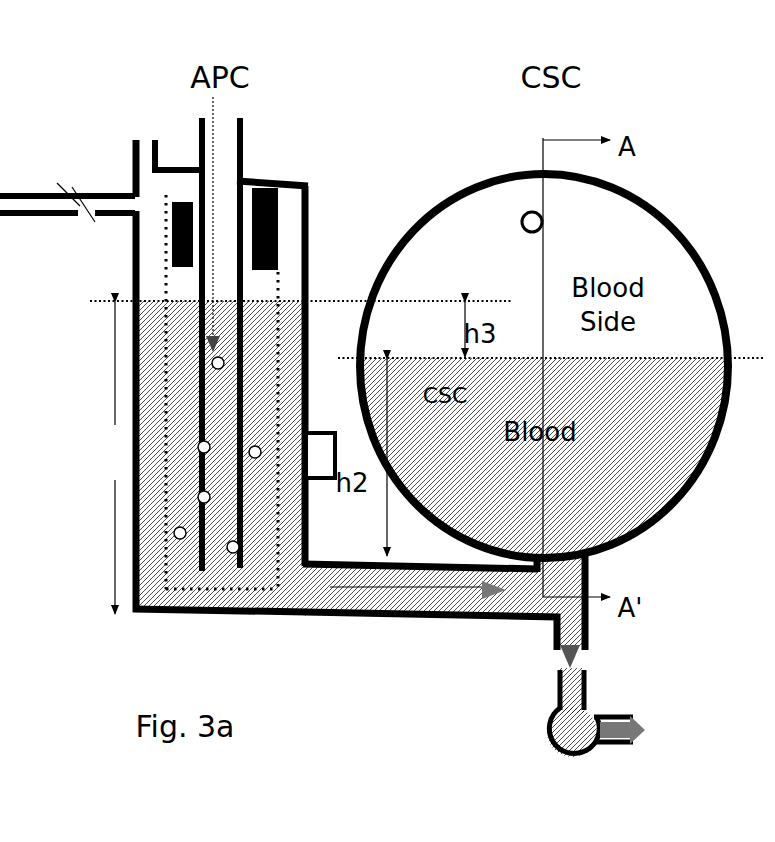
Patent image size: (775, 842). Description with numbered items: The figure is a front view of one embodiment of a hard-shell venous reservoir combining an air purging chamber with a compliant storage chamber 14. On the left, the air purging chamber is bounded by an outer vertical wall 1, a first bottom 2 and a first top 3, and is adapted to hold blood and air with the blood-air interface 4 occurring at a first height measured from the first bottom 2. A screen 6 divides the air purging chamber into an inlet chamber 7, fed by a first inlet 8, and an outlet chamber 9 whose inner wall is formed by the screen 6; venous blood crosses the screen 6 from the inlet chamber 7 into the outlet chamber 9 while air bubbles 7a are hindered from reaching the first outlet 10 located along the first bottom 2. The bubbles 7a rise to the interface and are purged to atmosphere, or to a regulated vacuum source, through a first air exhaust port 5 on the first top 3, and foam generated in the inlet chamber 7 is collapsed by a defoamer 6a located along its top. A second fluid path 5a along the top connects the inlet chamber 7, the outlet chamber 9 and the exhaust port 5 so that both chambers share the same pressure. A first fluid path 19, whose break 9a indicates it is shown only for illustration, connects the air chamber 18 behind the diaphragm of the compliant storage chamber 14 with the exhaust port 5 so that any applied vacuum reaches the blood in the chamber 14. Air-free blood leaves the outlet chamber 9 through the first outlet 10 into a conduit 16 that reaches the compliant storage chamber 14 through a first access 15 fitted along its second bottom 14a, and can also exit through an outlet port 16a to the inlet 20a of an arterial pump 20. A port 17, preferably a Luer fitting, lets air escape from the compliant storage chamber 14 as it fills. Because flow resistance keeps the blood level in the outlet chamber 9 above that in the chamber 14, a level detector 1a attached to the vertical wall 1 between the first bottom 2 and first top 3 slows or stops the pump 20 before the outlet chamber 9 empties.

The outer vertical wall 1 is at (307, 256).
The level detector 1a is at (316, 458).
The first bottom 2 is at (215, 614).
The first top 3 is at (175, 165).
The interface 4 is at (105, 306).
The first air exhaust port 5 is at (150, 152).
The second fluid path 5a is at (157, 190).
The screen 6 is at (165, 272).
The defoamer 6a is at (193, 230).
The inlet chamber 7 is at (250, 286).
The air bubbles 7a is at (205, 498).
The first inlet 8 is at (222, 158).
The outlet chamber 9 is at (153, 614).
The break 9a is at (75, 217).
The first outlet 10 is at (292, 617).
The compliant storage chamber 14 is at (657, 408).
The second bottom 14a is at (560, 556).
The first access 15 is at (560, 574).
The conduit 16 is at (400, 618).
The outlet port 16a is at (590, 648).
The port 17 is at (545, 218).
The air chamber 18 is at (59, 458).
The first fluid path 19 is at (100, 193).
The arterial pump 20 is at (545, 732).
The inlet 20a is at (560, 681).